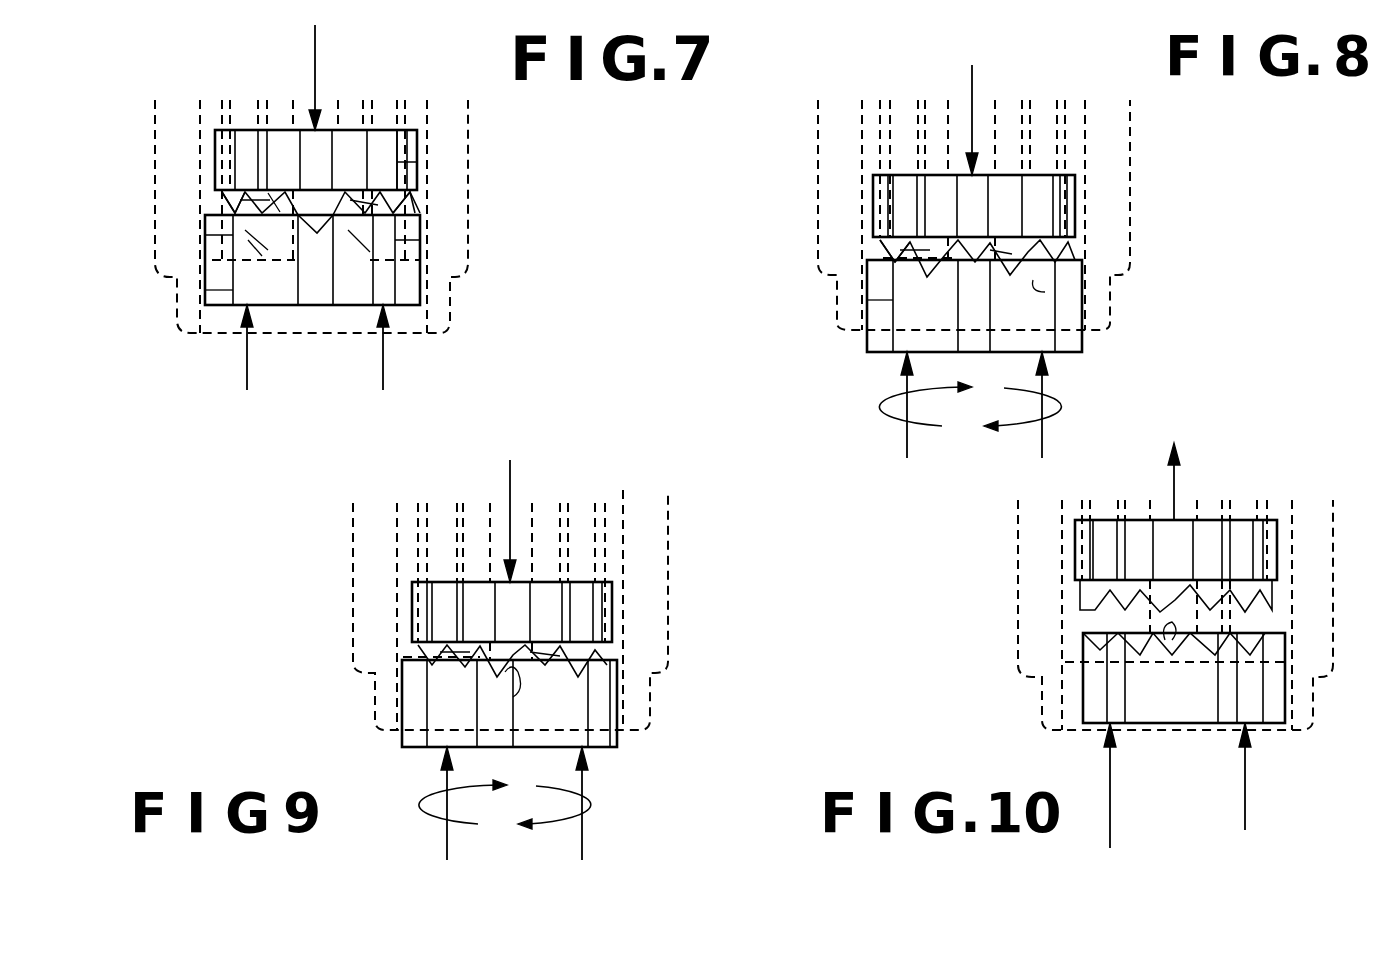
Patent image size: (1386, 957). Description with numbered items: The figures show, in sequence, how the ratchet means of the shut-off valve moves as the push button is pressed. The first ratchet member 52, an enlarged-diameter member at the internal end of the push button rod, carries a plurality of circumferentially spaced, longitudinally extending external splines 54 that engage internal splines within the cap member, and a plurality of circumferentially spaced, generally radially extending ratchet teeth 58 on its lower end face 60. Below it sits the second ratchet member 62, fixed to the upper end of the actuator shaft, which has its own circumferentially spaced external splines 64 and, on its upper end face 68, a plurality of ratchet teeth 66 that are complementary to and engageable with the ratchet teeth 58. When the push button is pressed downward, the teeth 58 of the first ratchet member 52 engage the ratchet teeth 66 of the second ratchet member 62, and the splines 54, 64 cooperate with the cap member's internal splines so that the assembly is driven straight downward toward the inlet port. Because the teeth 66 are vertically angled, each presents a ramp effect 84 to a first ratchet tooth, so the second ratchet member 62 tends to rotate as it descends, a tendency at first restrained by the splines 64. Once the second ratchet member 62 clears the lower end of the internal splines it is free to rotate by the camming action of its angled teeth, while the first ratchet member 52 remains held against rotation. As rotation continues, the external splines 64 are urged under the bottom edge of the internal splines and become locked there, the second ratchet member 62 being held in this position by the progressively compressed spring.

In FIG. 7, the first ratchet member 52 is at (381, 110).
In FIG. 8, the first ratchet member 52 is at (1078, 206).
In FIG. 9, the first ratchet member 52 is at (614, 610).
In FIG. 10, the first ratchet member 52 is at (1075, 540).
In FIG. 7, the external splines 54 is at (413, 163).
In FIG. 7, the ratchet teeth 58 is at (380, 202).
In FIG. 8, the ratchet teeth 58 is at (905, 275).
In FIG. 7, the lower end face 60 is at (217, 198).
In FIG. 8, the lower end face 60 is at (885, 262).
In FIG. 7, the second ratchet member 62 is at (420, 291).
In FIG. 8, the second ratchet member 62 is at (1082, 340).
In FIG. 9, the second ratchet member 62 is at (617, 700).
In FIG. 10, the second ratchet member 62 is at (1083, 685).
In FIG. 7, the external splines 64 is at (222, 288).
In FIG. 8, the external splines 64 is at (878, 315).
In FIG. 7, the ratchet teeth 66 is at (255, 268).
In FIG. 8, the ratchet teeth 66 is at (1035, 284).
In FIG. 7, the upper end face 68 is at (423, 207).
In FIG. 9, the ramp effect 84 is at (513, 697).
In FIG. 10, the ramp effect 84 is at (1165, 640).